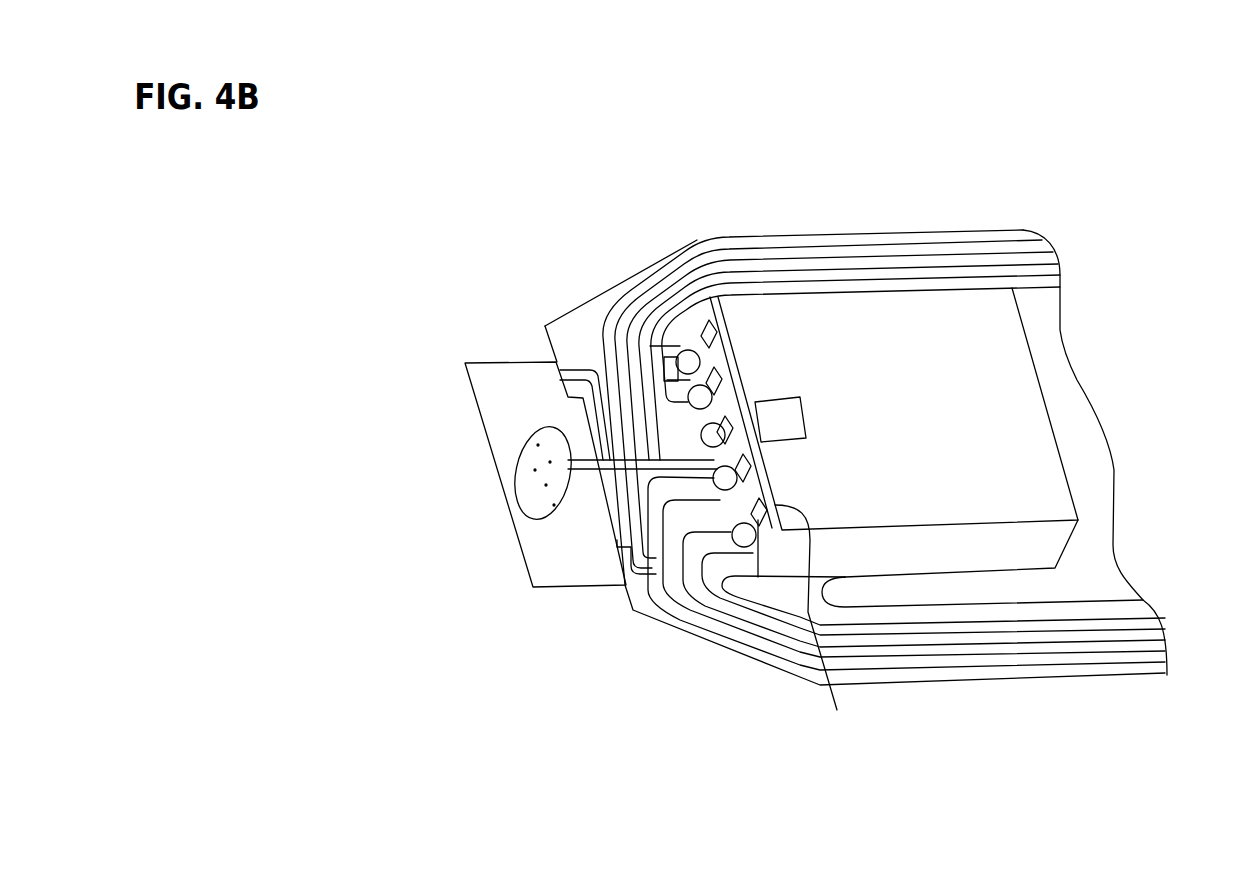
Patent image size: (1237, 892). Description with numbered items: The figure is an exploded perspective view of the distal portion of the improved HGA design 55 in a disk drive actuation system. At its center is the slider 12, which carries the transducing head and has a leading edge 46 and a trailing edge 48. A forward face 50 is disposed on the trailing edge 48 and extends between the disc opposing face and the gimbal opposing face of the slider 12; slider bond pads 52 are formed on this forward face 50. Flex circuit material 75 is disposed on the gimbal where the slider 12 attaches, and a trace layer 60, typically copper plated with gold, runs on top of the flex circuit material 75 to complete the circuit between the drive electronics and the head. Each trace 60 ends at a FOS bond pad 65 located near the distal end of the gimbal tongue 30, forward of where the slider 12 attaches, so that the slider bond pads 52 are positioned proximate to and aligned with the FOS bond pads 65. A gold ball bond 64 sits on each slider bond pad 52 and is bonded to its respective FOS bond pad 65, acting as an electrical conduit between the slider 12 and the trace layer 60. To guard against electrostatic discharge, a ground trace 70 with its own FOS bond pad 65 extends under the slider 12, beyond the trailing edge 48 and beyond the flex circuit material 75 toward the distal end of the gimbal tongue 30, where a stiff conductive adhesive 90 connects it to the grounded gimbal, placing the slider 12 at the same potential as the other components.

The improved HGA design 55 is at (490, 138).
The trace layer 60 is at (874, 270).
The gold ball bond 64 is at (682, 352).
The FOS bond pad 65 is at (673, 405).
The slider 12 is at (1030, 360).
The leading edge 46 is at (1088, 461).
The distal end of gimbal tongue 30 is at (487, 443).
The conductive adhesive 90 is at (553, 500).
The ground trace 70 is at (618, 472).
The forward face 50 is at (743, 495).
The slider bond pad 52 is at (758, 577).
The flex circuit material 75 is at (772, 660).
The trailing edge 48 is at (808, 585).